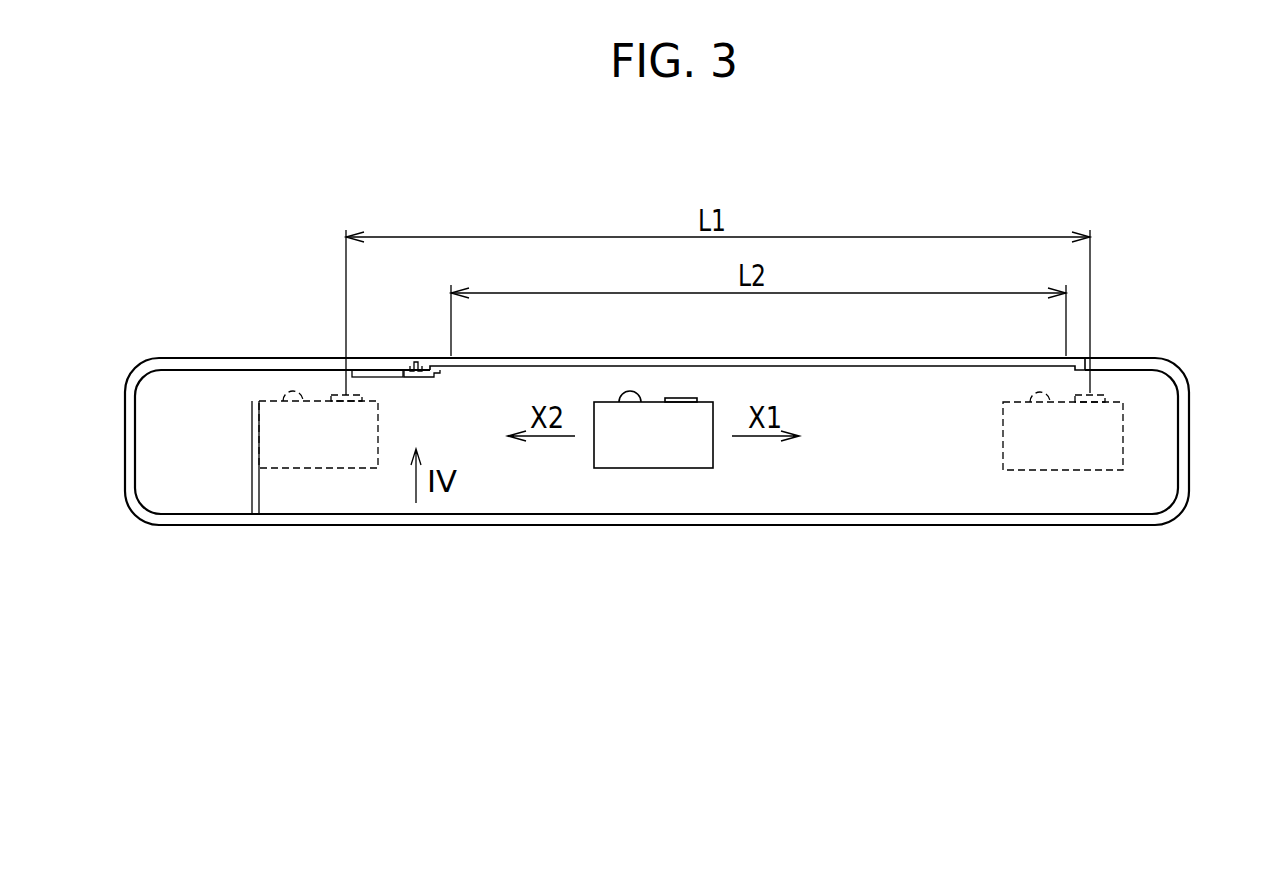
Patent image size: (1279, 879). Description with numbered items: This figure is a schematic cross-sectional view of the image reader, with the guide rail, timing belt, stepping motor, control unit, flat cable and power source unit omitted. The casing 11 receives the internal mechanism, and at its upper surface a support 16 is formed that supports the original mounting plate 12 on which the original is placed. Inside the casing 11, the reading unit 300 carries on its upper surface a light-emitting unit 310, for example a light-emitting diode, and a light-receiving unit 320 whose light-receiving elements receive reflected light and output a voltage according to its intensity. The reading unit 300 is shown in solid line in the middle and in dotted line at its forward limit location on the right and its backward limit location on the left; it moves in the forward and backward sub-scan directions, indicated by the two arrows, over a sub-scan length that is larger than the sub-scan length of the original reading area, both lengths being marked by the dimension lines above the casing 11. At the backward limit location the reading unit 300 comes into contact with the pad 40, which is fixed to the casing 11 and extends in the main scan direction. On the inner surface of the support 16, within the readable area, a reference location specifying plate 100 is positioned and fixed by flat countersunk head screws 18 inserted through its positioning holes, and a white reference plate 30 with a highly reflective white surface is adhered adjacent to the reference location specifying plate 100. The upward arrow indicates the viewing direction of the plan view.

The casing 11 is at (1189, 412).
The original mounting plate 12 is at (607, 357).
The support 16 is at (1140, 357).
The flat countersunk head screws 18 is at (412, 362).
The white reference plate 30 is at (382, 378).
The pad 40 is at (250, 429).
The reference location specifying plate 100 is at (434, 377).
The reading unit 300 is at (306, 488).
The light-emitting unit 310 is at (628, 393).
The light-receiving unit 320 is at (697, 398).